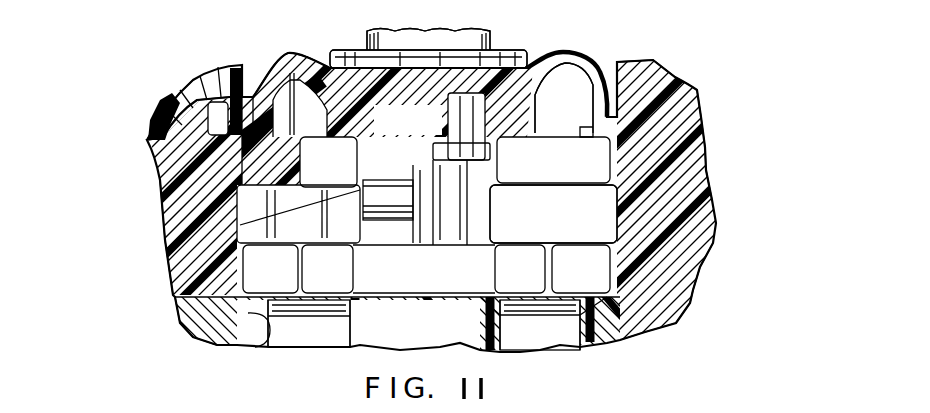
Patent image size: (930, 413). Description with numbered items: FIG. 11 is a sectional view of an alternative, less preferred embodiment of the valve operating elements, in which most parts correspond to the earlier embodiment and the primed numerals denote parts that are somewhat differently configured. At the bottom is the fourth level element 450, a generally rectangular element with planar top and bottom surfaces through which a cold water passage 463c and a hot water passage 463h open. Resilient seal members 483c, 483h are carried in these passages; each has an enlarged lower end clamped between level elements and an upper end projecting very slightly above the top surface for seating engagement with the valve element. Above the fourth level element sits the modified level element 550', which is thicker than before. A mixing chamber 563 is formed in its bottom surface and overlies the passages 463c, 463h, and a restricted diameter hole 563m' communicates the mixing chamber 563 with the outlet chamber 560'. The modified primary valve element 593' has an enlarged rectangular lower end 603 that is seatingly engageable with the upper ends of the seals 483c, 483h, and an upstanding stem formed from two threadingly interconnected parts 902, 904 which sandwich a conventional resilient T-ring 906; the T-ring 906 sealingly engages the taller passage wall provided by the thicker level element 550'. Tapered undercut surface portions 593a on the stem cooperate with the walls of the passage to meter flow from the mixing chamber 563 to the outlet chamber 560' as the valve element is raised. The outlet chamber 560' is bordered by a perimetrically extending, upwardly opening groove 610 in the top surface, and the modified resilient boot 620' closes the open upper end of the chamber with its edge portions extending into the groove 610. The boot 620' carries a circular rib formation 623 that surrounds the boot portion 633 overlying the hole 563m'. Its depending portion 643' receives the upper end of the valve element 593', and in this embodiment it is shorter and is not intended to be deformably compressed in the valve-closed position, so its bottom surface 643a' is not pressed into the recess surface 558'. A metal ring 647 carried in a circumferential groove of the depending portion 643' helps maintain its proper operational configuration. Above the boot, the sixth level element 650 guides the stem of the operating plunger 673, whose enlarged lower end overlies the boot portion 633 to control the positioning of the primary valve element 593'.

The circular rib formation 623 is at (283, 60).
The boot portion 633 is at (357, 66).
The operating plunger 673 is at (476, 39).
The boot 620' is at (603, 58).
The sixth level element 650 is at (697, 86).
The recess surface 558' is at (740, 118).
The level element 550' is at (754, 173).
The primary valve element 593' is at (681, 214).
The enlarged rectangular lower end 603 is at (697, 257).
The hot water passage 463h is at (697, 299).
The fourth level element 450 is at (690, 318).
The resilient seal member 483h is at (567, 337).
The resilient seal member 483c is at (290, 337).
The cold water passage 463c is at (192, 329).
The restricted diameter hole 563m' is at (118, 253).
The mixing chamber 563 is at (200, 217).
The bottom surface of depending boot portion 643a' is at (138, 217).
The outlet chamber 560' is at (153, 188).
The perimetrically extending groove 610 is at (200, 138).
The stem part 902 is at (427, 130).
The stem part 904 is at (388, 200).
The T-ring 906 is at (352, 161).
The tapered undercut surface portion 593a is at (460, 186).
The depending boot portion 643' is at (545, 98).
The metal ring 647 is at (518, 118).